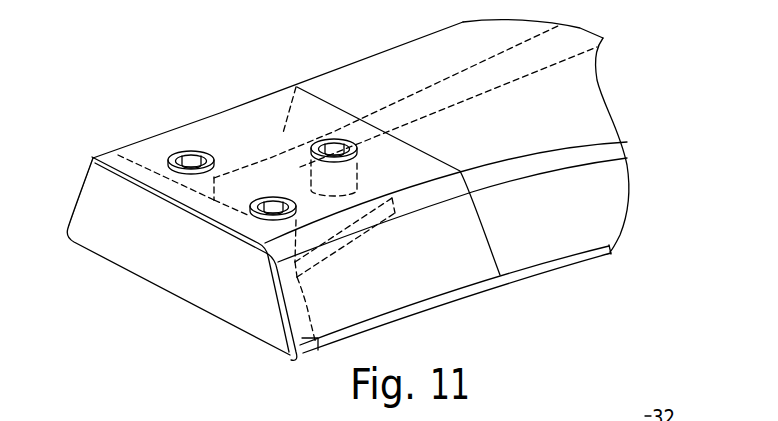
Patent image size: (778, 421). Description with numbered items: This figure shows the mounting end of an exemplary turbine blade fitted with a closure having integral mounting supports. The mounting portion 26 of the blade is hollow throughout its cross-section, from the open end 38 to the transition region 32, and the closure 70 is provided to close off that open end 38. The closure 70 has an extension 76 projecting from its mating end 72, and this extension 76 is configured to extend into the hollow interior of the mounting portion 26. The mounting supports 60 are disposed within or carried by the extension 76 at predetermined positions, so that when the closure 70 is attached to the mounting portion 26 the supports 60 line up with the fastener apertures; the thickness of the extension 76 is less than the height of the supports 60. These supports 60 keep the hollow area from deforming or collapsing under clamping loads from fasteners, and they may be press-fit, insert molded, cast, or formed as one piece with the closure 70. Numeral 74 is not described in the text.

The mounting portion 26 is at (167, 134).
The transition region 32 is at (567, 112).
The open end 38 is at (112, 172).
The mounting supports 60 is at (297, 223).
The closure 70 is at (90, 212).
The mating end 72 is at (217, 213).
The side surface 74 is at (148, 190).
The extension 76 is at (388, 191).